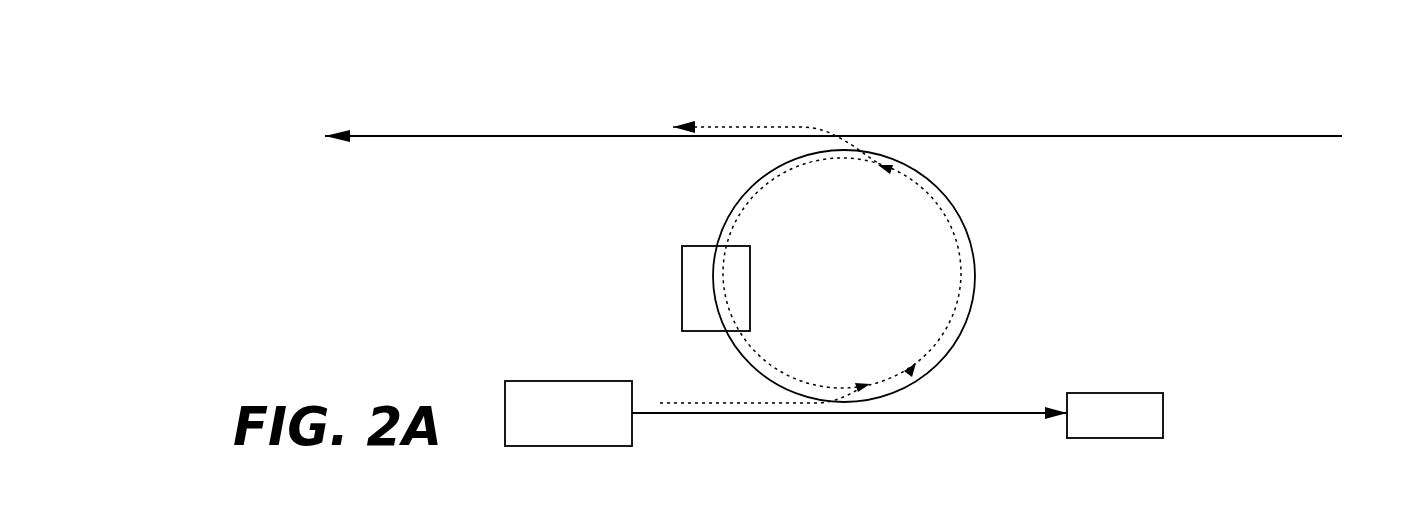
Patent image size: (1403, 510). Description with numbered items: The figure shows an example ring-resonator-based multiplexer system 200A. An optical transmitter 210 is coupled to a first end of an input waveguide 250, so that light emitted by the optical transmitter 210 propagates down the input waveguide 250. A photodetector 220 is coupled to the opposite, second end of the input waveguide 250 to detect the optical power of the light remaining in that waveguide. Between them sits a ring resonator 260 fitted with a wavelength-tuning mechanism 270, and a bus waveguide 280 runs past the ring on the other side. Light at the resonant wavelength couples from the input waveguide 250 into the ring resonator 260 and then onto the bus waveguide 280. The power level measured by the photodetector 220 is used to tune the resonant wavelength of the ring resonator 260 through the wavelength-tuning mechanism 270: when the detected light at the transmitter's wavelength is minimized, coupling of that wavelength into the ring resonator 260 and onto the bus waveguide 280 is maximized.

The ring-resonator-based multiplexer system 200A is at (385, 124).
The optical transmitter 210 is at (540, 381).
The photodetector 220 is at (1130, 393).
The input waveguide 250 is at (1000, 413).
The ring resonator 260 is at (963, 228).
The wavelength-tuning mechanism 270 is at (681, 297).
The bus waveguide 280 is at (1167, 136).